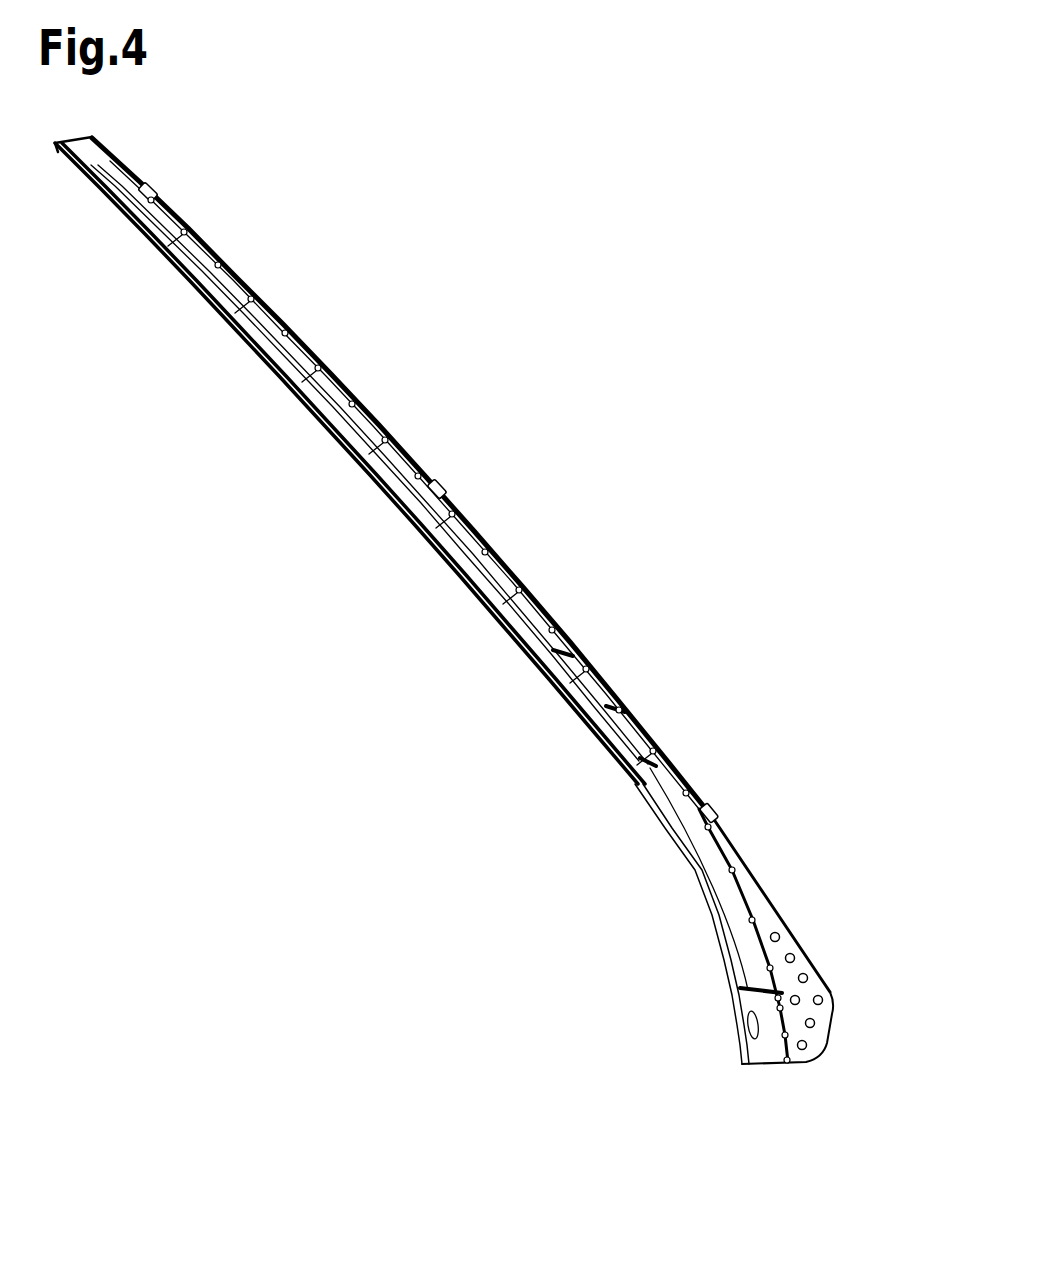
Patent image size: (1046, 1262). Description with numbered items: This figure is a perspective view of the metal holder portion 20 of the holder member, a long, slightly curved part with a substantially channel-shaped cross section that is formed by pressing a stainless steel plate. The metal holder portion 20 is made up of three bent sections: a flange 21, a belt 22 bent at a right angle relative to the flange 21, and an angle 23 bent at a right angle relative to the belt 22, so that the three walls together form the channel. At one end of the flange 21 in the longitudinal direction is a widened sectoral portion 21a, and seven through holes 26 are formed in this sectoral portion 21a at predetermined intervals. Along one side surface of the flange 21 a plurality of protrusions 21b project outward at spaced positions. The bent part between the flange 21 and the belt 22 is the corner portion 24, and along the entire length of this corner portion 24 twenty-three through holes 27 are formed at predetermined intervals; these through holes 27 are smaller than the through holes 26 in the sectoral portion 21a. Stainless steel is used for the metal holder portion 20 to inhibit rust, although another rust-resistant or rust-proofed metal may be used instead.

The metal holder portion 20 is at (322, 452).
The flange 21 is at (587, 660).
The sectoral portion 21a is at (803, 967).
The protrusions 21b is at (128, 172).
The belt 22 is at (660, 780).
The angle 23 is at (653, 798).
The corner portion 24 is at (740, 883).
The through holes 26 is at (812, 996).
The through holes 27 is at (168, 257).